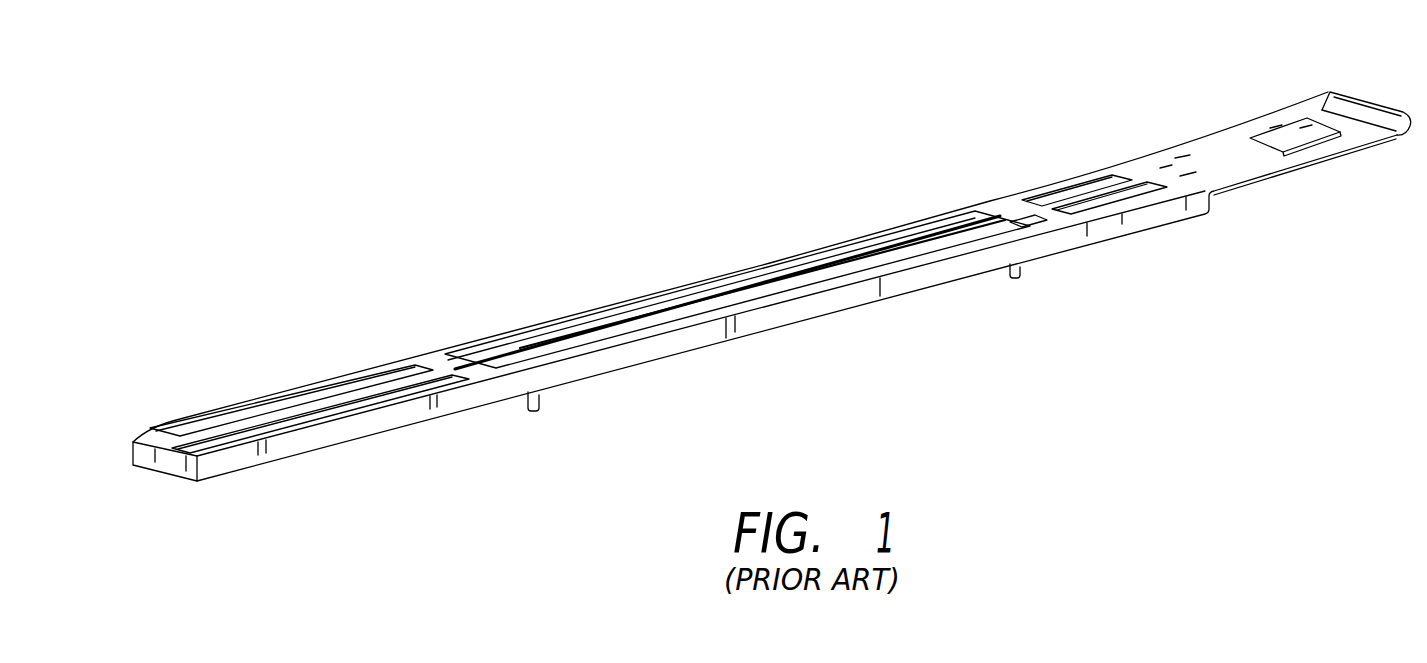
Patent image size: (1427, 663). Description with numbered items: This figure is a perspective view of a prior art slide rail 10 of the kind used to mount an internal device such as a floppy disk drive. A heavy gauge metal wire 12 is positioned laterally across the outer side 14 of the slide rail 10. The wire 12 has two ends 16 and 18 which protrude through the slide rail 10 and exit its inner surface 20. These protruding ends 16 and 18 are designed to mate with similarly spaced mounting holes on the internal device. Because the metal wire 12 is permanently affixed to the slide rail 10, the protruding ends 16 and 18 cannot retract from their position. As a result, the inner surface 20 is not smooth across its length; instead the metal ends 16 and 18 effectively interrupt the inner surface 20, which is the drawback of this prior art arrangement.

The slide rail 10 is at (880, 104).
The heavy gauge metal wire 12 is at (716, 296).
The outer side 14 is at (1205, 157).
The end of wire 16 is at (534, 411).
The end of wire 18 is at (1016, 278).
The inner surface 20 is at (1160, 226).